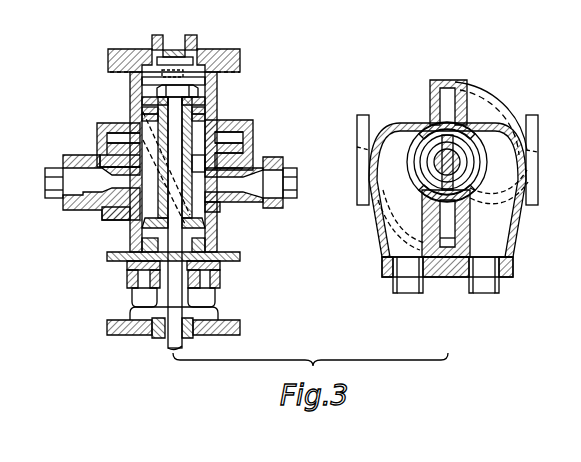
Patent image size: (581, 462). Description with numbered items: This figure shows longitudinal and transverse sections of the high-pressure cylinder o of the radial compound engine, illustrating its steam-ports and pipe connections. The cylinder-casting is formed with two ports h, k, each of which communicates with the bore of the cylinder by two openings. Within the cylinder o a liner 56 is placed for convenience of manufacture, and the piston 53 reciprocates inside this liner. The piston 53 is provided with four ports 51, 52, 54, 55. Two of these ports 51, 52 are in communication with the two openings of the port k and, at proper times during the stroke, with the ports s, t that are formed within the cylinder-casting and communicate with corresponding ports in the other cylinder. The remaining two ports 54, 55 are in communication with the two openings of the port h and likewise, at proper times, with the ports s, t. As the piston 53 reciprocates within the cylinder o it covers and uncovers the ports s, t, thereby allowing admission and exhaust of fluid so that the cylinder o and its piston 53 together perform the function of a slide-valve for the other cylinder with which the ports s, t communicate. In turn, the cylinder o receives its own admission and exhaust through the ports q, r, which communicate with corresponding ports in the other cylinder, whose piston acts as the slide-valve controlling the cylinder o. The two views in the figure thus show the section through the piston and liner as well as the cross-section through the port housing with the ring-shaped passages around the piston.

The port r is at (186, 60).
The cylinder o is at (221, 101).
The liner 56 is at (212, 80).
The port 51 is at (200, 108).
The piston 53 is at (150, 109).
The port 55 is at (150, 117).
The port s is at (108, 150).
The port k is at (60, 183).
The port t is at (250, 163).
The port h is at (101, 138).
The port 52 is at (131, 207).
The port 54 is at (214, 208).
The port q is at (226, 252).